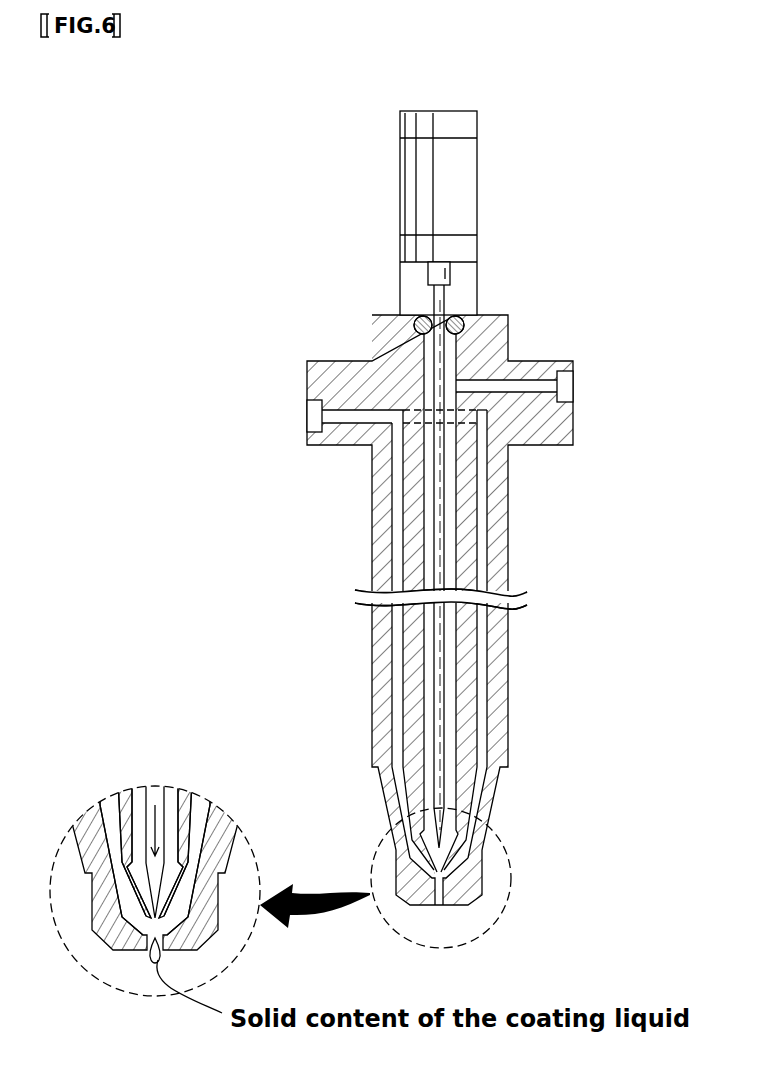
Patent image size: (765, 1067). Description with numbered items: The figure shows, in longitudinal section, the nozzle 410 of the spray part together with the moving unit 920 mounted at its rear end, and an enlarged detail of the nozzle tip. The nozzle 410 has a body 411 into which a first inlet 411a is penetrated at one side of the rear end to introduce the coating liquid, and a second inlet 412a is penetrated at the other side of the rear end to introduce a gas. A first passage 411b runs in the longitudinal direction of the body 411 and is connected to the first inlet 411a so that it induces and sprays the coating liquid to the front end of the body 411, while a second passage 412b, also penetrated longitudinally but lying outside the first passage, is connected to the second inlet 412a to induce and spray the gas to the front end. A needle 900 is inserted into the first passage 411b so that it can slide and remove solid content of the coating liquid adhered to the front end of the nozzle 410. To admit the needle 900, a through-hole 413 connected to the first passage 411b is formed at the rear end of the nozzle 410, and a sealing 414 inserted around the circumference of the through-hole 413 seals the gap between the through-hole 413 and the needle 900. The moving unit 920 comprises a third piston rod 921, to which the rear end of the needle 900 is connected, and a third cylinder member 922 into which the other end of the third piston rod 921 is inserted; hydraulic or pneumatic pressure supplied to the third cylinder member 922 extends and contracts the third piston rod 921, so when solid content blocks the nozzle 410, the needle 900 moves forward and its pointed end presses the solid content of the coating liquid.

The nozzle 410 is at (357, 660).
The body 411 is at (507, 546).
The first inlet 411a is at (575, 383).
The first passage 411b is at (456, 633).
The second inlet 412a is at (317, 415).
The second passage 412b is at (397, 686).
The through-hole 413 is at (428, 365).
The sealing 414 is at (418, 333).
The needle 900 is at (440, 497).
The moving unit 920 is at (534, 213).
The third piston rod 921 is at (445, 271).
The third cylinder member 922 is at (460, 207).